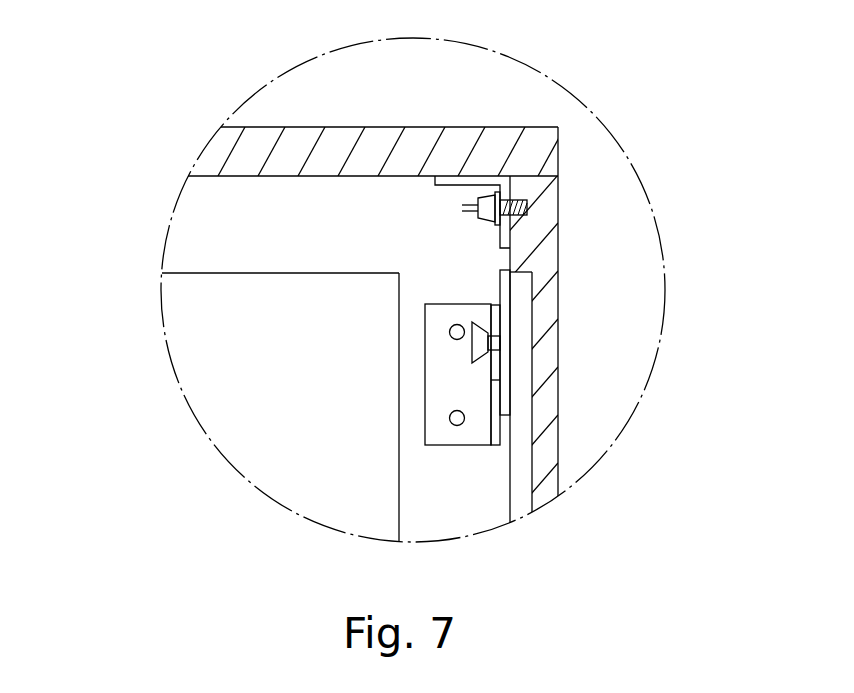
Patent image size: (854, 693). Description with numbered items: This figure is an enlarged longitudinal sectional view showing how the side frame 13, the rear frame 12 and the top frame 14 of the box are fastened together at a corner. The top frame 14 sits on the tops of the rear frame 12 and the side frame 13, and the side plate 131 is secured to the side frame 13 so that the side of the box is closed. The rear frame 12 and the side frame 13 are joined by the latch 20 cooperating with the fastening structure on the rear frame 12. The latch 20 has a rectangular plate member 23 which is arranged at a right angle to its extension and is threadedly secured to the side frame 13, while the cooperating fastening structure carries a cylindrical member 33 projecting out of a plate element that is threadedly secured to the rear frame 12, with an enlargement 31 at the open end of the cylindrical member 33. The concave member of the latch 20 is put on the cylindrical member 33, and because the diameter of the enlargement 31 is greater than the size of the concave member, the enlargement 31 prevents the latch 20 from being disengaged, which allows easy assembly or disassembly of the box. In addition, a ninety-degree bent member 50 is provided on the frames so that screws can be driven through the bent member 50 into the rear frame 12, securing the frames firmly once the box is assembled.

The rear frame 12 is at (547, 237).
The side frame 13 is at (430, 507).
The side plate 131 is at (203, 368).
The top frame 14 is at (327, 152).
The latch 20 is at (523, 333).
The plate member 23 is at (435, 405).
The enlargement 31 is at (458, 355).
The cylindrical member 33 is at (487, 327).
The 90-degree bent member 50 is at (488, 180).